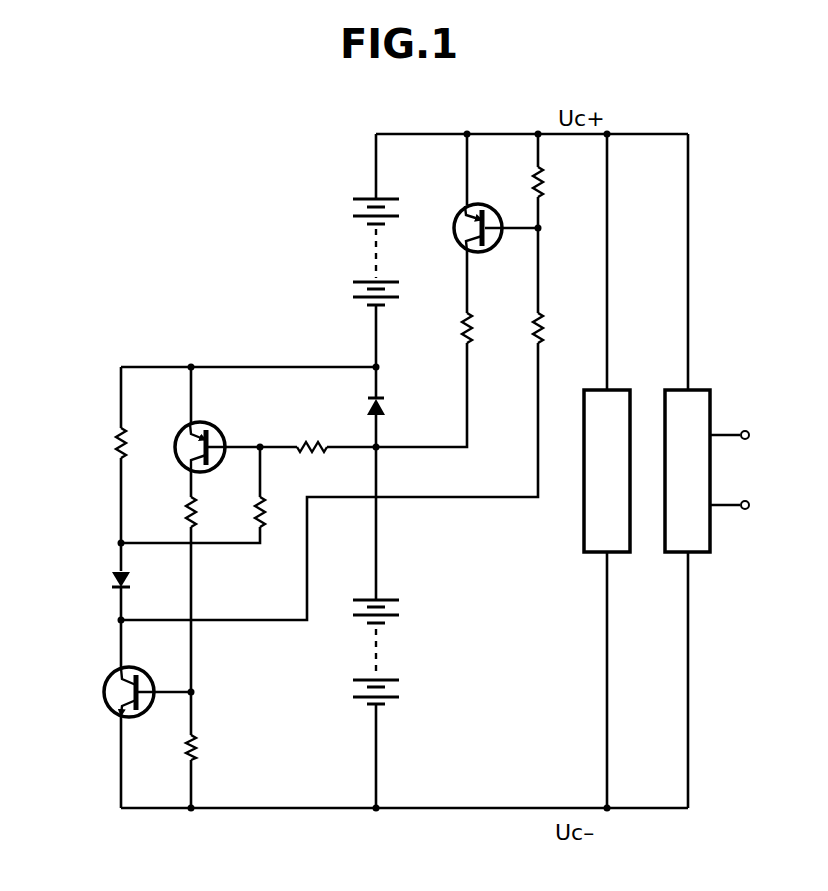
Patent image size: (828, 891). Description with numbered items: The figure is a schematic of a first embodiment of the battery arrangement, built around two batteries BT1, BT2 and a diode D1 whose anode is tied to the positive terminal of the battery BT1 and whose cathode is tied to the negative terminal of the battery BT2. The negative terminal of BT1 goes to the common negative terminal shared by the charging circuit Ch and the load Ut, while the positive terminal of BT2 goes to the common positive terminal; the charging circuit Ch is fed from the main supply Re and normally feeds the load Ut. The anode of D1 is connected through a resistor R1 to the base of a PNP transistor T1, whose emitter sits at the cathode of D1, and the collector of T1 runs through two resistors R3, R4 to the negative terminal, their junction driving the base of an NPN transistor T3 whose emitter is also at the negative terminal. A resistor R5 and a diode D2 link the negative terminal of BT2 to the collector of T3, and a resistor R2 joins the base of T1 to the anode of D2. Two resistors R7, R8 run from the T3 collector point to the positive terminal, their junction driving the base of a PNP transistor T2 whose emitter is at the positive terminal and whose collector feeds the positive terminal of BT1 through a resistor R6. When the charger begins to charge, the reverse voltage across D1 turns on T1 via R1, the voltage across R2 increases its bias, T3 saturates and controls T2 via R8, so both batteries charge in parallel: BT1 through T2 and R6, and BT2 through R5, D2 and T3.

The PNP transistor T1 is at (211, 430).
The PNP transistor T2 is at (469, 213).
The NPN transistor T3 is at (112, 683).
The resistor R1 is at (304, 442).
The resistor R2 is at (257, 522).
The resistor R3 is at (188, 522).
The resistor R4 is at (196, 752).
The resistor R5 is at (117, 450).
The resistor R6 is at (463, 326).
The resistor R7 is at (545, 178).
The resistor R8 is at (543, 323).
The diode D1 is at (385, 407).
The diode D2 is at (117, 582).
The battery BT1 is at (390, 626).
The battery BT2 is at (364, 230).
The load Ut is at (595, 516).
The charging circuit Ch is at (690, 516).
The main supply Re is at (731, 470).